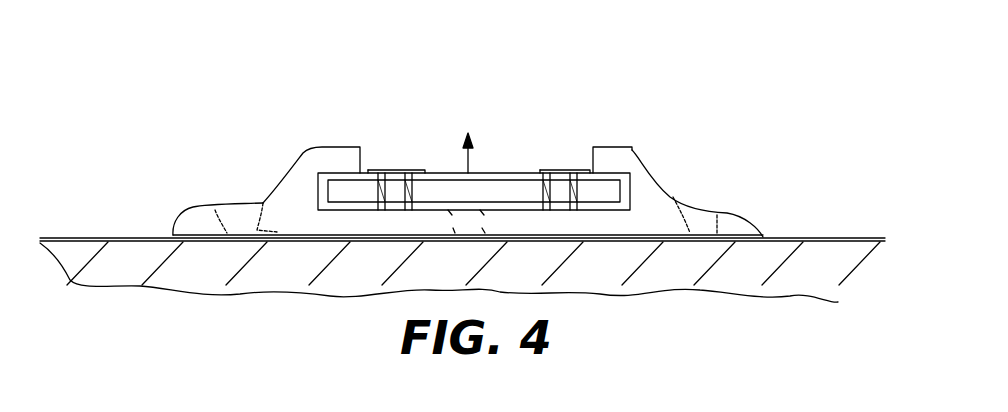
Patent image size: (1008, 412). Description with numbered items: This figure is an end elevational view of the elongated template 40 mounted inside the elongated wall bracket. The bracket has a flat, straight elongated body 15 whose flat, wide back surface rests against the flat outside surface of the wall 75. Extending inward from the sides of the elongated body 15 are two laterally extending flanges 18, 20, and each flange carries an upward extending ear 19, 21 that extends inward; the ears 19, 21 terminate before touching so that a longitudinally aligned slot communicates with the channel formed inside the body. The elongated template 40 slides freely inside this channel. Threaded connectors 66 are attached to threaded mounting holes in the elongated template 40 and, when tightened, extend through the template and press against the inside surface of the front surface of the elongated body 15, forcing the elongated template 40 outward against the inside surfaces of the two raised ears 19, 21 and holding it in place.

The elongated body 15 is at (177, 197).
The flange 18 is at (250, 197).
The ear 19 is at (317, 150).
The flange 20 is at (673, 195).
The ear 21 is at (617, 140).
The elongated template 40 is at (610, 176).
The threaded connectors 66 is at (390, 168).
The wall 75 is at (800, 240).